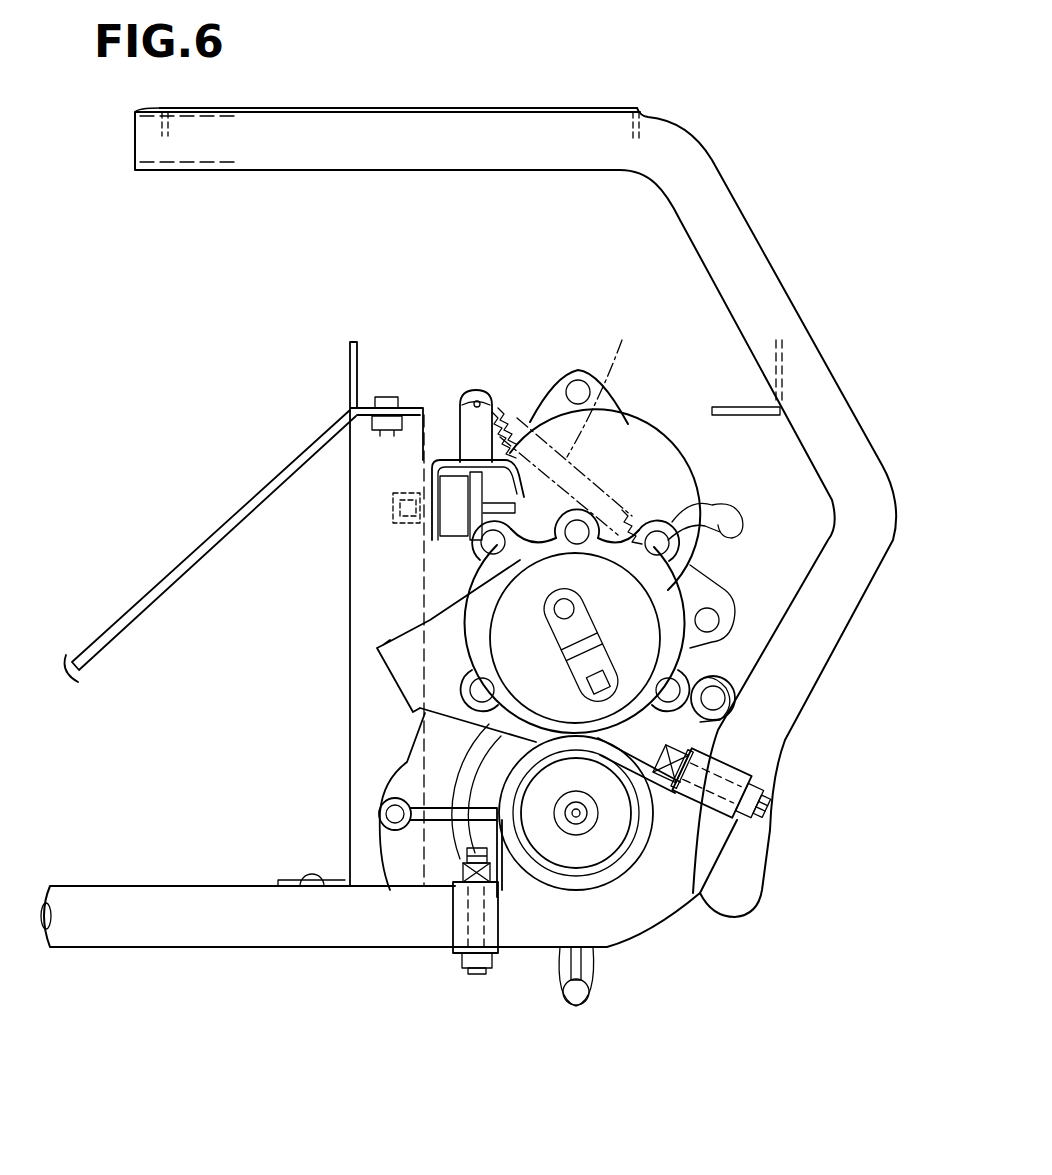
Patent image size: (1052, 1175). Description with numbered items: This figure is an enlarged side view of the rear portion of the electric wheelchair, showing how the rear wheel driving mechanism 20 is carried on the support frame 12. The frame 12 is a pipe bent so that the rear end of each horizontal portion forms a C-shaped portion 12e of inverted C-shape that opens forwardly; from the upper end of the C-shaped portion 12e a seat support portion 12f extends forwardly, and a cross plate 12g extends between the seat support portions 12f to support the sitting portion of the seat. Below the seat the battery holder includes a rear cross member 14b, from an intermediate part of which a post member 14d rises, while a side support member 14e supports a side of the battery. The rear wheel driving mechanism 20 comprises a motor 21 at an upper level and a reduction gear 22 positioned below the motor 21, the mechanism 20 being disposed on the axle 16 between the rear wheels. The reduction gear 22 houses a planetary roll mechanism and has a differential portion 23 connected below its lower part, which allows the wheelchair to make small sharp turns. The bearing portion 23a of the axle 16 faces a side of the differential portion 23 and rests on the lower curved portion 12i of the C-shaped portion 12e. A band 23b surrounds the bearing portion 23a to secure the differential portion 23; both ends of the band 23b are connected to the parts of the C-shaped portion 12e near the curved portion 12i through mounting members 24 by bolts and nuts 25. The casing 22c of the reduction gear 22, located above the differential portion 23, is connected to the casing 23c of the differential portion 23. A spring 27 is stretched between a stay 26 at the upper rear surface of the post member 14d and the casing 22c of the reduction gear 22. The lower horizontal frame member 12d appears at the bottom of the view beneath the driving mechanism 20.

The support frame 12 is at (270, 902).
The lower frame member 12d is at (240, 935).
The C-shaped portion 12e is at (898, 445).
The seat support portion 12f is at (455, 172).
The cross plate 12g is at (482, 108).
The lower curved portion 12i is at (618, 921).
The cross member 14b is at (323, 887).
The post member 14d is at (372, 573).
The side support member 14e is at (232, 520).
The axle 16 is at (576, 818).
The rear wheel driving mechanism 20 is at (761, 450).
The motor 21 is at (640, 459).
The reduction gear 22 is at (462, 650).
The casing 22c is at (700, 600).
The differential portion 23 is at (736, 706).
The bearing portion 23a is at (640, 830).
The band 23b is at (502, 765).
The casing 23c is at (475, 780).
The mounting member 24 is at (733, 767).
The bolts and nuts 25 is at (770, 813).
The stay 26 is at (470, 395).
The spring 27 is at (571, 421).